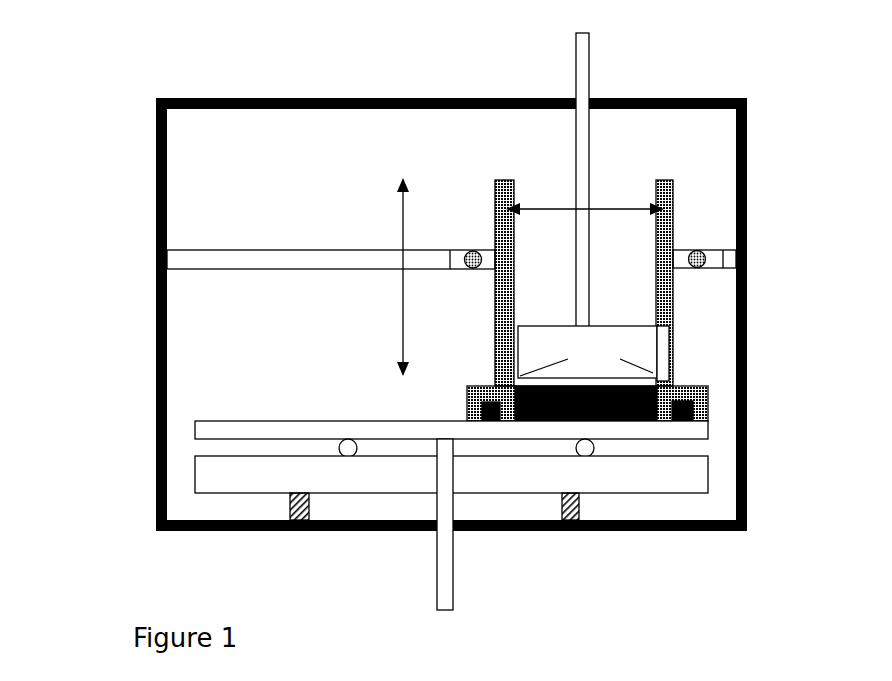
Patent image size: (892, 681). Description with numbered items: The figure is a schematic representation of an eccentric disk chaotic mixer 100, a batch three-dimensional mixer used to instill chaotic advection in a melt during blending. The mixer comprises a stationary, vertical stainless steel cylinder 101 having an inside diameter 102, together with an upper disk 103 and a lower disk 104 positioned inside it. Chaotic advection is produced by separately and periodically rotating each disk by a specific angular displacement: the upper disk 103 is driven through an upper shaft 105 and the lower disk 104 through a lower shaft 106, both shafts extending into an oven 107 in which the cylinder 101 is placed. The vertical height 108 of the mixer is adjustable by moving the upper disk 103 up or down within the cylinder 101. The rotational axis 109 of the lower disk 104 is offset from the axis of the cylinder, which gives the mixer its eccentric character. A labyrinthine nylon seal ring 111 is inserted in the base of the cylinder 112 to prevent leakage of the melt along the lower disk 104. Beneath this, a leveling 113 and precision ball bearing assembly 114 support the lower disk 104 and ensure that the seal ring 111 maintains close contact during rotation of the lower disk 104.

The eccentric disk chaotic mixer 100 is at (154, 89).
The stationary vertical stainless steel cylinder 101 is at (670, 175).
The inside diameter 102 is at (585, 225).
The upper disk 103 is at (637, 358).
The lower disk 104 is at (707, 425).
The upper shaft 105 is at (589, 42).
The lower shaft 106 is at (455, 579).
The oven 107 is at (160, 146).
The vertical height 108 is at (402, 278).
The rotational axis of the lower disk 109 is at (613, 407).
The labyrinthine nylon seal ring 111 is at (453, 393).
The base of the cylinder 112 is at (586, 355).
The leveling assembly 113 is at (200, 479).
The precision ball bearing assembly 114 is at (195, 445).